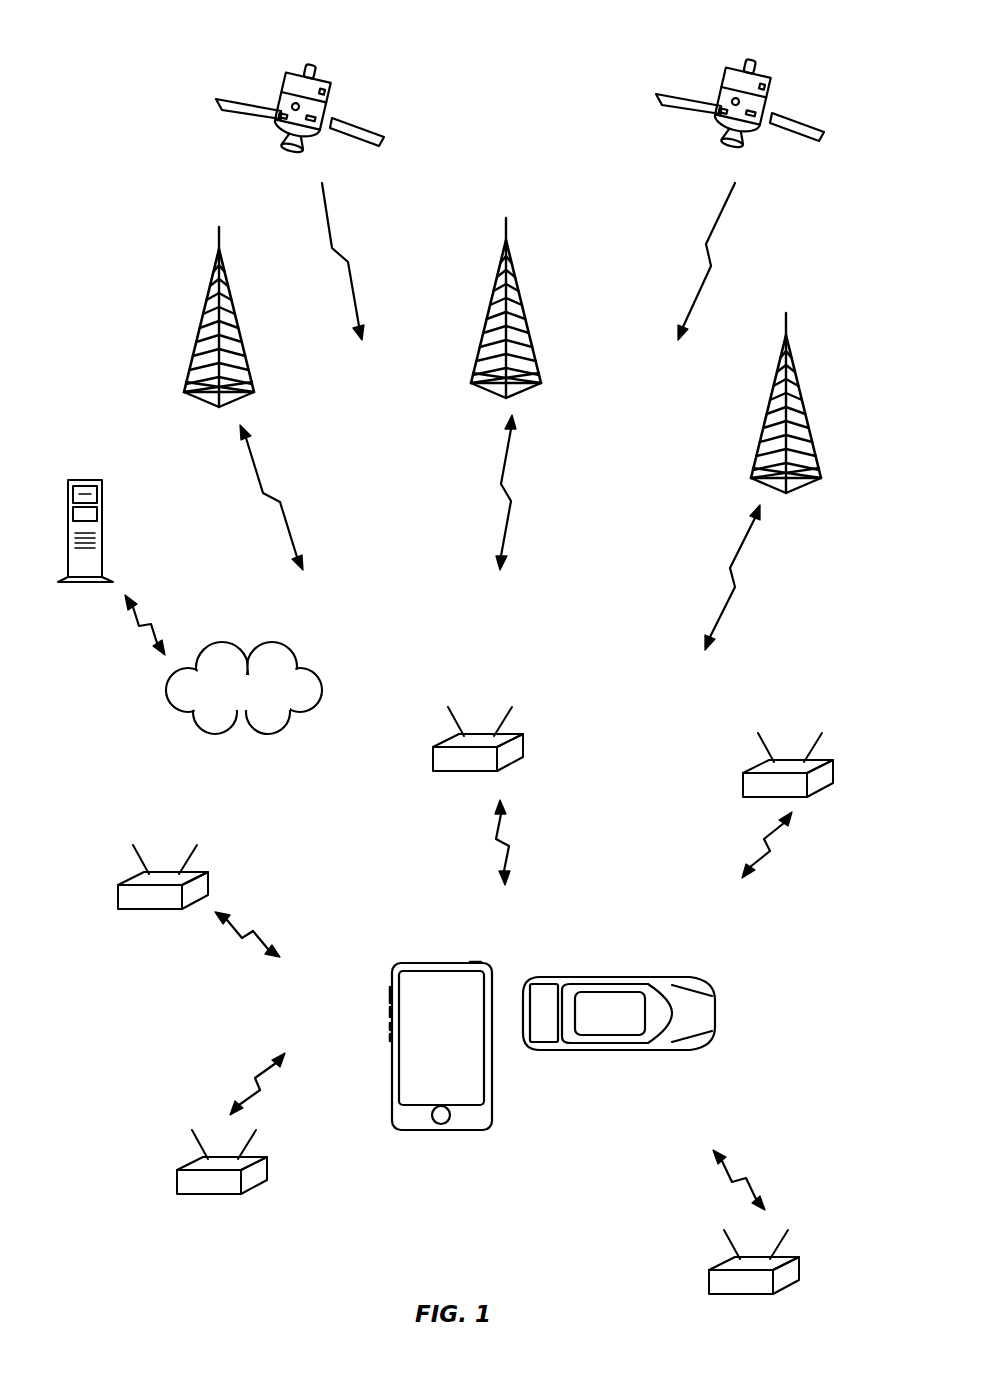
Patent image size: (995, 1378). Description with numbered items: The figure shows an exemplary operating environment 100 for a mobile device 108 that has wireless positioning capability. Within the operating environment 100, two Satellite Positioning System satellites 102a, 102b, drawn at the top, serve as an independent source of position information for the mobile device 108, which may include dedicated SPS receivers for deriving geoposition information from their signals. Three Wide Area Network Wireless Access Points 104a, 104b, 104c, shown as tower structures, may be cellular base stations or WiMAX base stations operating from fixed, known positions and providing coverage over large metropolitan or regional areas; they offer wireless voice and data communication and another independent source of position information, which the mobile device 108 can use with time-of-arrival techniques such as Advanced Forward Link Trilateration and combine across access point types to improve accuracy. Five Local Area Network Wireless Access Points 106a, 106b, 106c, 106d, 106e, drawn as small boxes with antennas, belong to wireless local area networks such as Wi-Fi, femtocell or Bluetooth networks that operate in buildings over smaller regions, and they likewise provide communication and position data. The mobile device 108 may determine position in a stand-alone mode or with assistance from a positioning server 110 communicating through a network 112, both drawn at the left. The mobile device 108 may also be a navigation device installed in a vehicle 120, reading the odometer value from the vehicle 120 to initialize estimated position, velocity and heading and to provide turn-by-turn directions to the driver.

The operating environment 100 is at (140, 73).
The Satellite Positioning System satellite 102a is at (318, 63).
The Satellite Positioning System satellite 102b is at (746, 57).
The Wide Area Network Wireless Access Point 104a is at (217, 238).
The Wide Area Network Wireless Access Point 104b is at (507, 230).
The Wide Area Network Wireless Access Point 104c is at (787, 325).
The Local Area Network Wireless Access Point 106a is at (210, 873).
The Local Area Network Wireless Access Point 106b is at (524, 745).
The Local Area Network Wireless Access Point 106c is at (744, 784).
The Local Area Network Wireless Access Point 106d is at (268, 1170).
The Local Area Network Wireless Access Point 106e is at (709, 1282).
The mobile device 108 is at (433, 963).
The positioning server 110 is at (83, 478).
The network 112 is at (266, 648).
The vehicle 120 is at (615, 977).